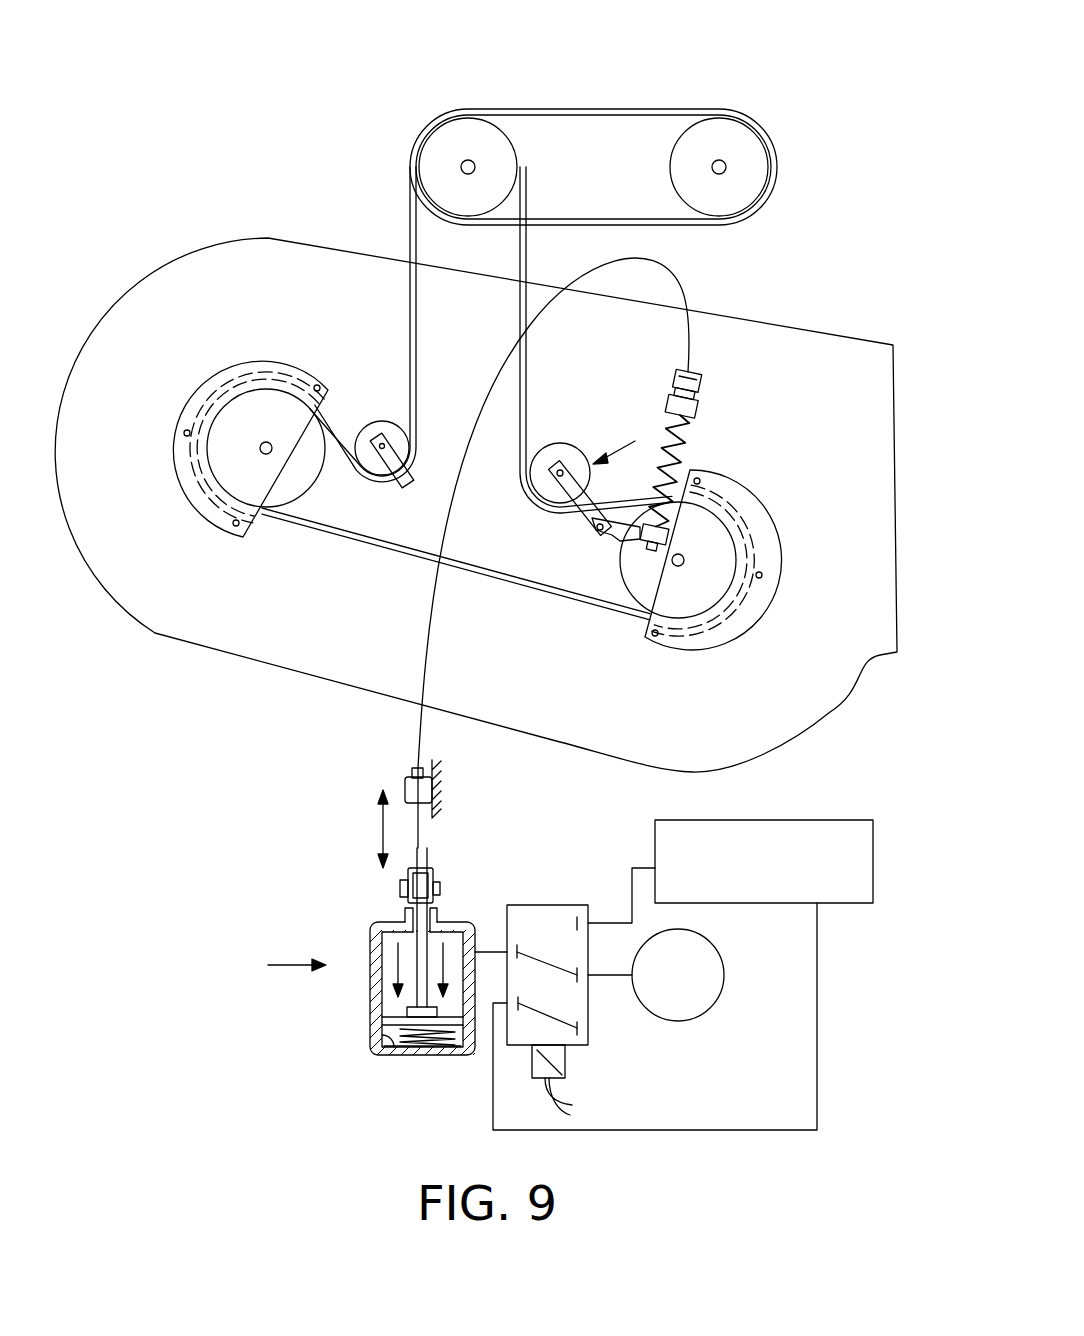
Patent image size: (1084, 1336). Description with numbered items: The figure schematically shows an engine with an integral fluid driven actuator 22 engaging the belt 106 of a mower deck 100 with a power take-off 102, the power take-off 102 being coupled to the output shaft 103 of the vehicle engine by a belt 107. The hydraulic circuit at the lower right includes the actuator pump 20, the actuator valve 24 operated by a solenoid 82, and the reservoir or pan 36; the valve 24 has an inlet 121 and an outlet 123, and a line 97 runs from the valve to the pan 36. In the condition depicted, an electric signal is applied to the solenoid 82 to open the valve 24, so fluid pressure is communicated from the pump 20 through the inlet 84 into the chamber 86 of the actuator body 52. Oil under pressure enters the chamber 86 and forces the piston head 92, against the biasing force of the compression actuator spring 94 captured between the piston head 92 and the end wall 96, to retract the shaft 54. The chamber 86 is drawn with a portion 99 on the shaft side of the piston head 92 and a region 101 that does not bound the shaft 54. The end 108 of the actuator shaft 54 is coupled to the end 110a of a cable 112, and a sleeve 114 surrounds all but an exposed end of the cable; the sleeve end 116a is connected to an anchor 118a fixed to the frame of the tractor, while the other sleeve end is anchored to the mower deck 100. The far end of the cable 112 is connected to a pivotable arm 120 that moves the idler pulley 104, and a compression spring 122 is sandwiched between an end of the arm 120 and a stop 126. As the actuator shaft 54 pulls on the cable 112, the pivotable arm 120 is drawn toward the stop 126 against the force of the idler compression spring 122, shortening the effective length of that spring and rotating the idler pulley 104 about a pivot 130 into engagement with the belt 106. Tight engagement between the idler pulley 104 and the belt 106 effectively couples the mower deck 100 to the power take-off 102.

The actuator pump 20 is at (683, 1008).
The fluid driven actuator 22 is at (281, 966).
The actuator valve 24 is at (545, 915).
The reservoir or pan 36 is at (818, 830).
The actuator body 52 is at (382, 1022).
The actuator shaft 54 is at (430, 903).
The solenoid 82 is at (563, 1060).
The inlet 84 is at (486, 951).
The chamber 86 is at (385, 950).
The piston head 92 is at (395, 1013).
The compression actuator spring 94 is at (438, 1040).
The end wall 96 is at (380, 1046).
The line 97 is at (608, 920).
The pressure chamber 99 is at (400, 938).
The mower deck 100 is at (770, 340).
The region of the chamber 101 is at (452, 1046).
The power take-off 102 is at (470, 137).
The output shaft 103 is at (721, 137).
The idler pulley 104 is at (578, 448).
The belt 106 is at (527, 258).
The belt 107 is at (636, 112).
The end of the actuator shaft 108 is at (406, 889).
The end of cable 110a is at (422, 845).
The cable 112 is at (424, 690).
The sleeve 114 is at (420, 607).
The sleeve end 116a is at (413, 766).
The anchor 118a is at (402, 790).
The pivotable arm 120 is at (556, 493).
The inlet of the valve 121 is at (606, 978).
The compression spring 122 is at (708, 478).
The outlet of the valve 123 is at (515, 952).
The stop 126 is at (662, 407).
The pivot 130 is at (600, 540).